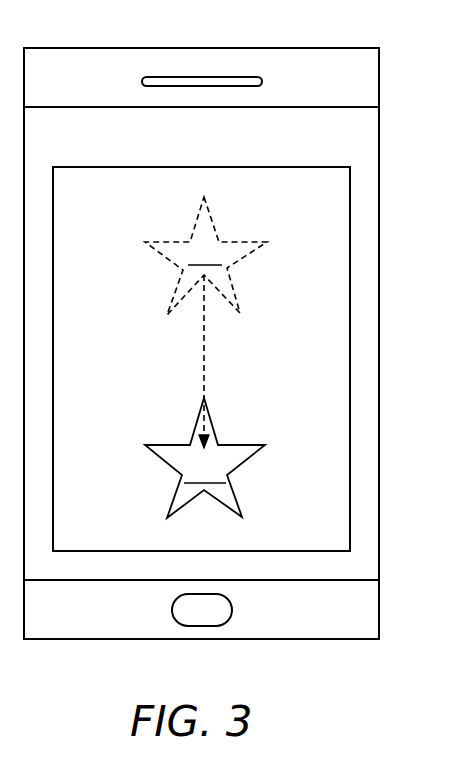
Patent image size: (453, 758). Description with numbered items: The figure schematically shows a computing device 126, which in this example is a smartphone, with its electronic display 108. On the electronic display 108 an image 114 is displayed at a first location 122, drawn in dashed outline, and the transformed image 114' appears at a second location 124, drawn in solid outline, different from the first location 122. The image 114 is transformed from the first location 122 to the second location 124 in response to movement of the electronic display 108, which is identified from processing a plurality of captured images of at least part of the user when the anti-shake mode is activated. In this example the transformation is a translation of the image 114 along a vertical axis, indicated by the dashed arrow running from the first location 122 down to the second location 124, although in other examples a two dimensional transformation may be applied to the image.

The electronic display 108 is at (350, 363).
The computing device 126 is at (201, 48).
The first location 122 is at (230, 241).
The image 114 is at (205, 255).
The second location 124 is at (227, 443).
The transformed image 114' is at (205, 472).